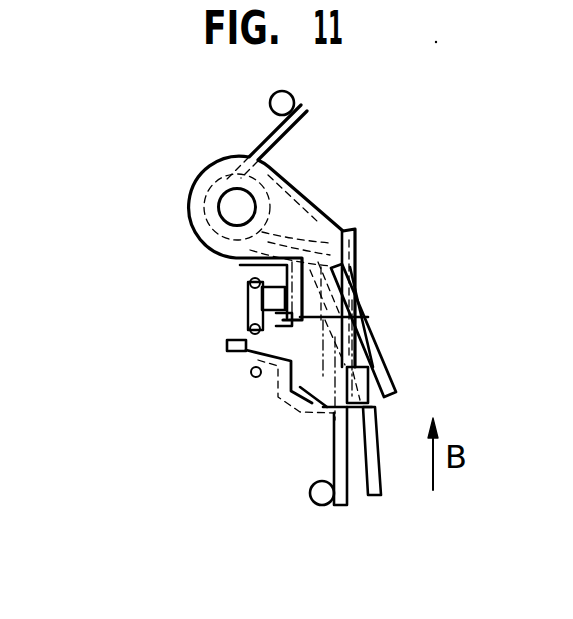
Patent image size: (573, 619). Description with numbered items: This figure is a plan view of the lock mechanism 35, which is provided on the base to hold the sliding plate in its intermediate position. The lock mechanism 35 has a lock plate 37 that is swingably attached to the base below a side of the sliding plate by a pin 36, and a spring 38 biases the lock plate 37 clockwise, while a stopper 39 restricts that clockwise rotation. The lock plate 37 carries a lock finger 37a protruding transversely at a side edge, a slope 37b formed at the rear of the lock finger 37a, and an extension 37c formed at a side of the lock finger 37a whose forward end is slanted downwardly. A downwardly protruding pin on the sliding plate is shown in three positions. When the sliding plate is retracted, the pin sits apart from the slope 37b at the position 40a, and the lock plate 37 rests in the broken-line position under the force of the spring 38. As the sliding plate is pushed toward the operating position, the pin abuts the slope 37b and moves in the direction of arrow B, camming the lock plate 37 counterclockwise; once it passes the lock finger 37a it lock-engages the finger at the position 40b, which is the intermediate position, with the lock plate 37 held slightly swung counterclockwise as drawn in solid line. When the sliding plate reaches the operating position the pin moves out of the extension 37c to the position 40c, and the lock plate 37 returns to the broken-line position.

The lock mechanism 35 is at (379, 272).
The pin 36 is at (226, 199).
The lock plate 37 is at (280, 198).
The lock finger 37a is at (227, 342).
The slope 37b is at (277, 379).
The extension 37c is at (368, 316).
The spring 38 is at (270, 135).
The stopper 39 is at (311, 498).
The pin position (retracted position) 40a is at (250, 372).
The pin position (intermediate position) 40b is at (249, 328).
The pin position (operating position) 40c is at (250, 284).